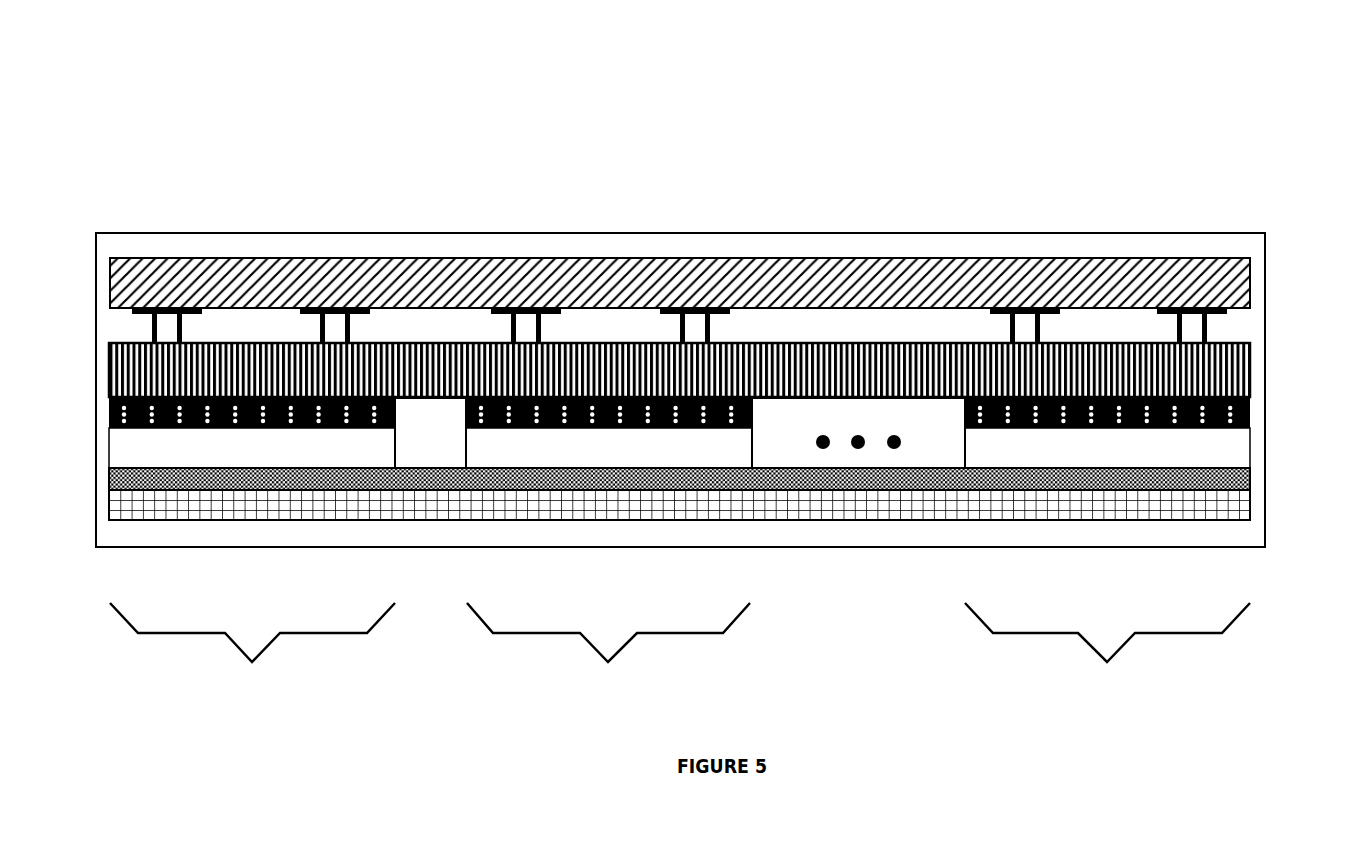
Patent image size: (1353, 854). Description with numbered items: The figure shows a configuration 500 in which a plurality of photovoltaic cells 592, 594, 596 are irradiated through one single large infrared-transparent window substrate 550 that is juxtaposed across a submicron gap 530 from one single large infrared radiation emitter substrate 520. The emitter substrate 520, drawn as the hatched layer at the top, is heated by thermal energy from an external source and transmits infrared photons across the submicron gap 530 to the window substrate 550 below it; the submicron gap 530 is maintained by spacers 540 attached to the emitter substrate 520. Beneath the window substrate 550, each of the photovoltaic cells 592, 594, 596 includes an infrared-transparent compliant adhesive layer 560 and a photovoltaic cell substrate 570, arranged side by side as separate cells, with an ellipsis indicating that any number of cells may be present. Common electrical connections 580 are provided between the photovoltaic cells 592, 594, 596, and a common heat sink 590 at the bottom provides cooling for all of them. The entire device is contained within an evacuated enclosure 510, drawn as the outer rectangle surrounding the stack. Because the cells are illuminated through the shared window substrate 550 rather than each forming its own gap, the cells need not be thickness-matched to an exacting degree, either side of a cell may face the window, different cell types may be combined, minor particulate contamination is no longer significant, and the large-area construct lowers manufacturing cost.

The configuration 500 is at (163, 58).
The evacuated enclosure 510 is at (652, 220).
The single large infrared radiation emitter substrate 520 is at (1251, 268).
The submicron gap 530 is at (1251, 320).
The spacers 540 is at (1218, 333).
The single large infrared-transparent window substrate 550 is at (1251, 383).
The infrared-transparent compliant adhesive layer 560 is at (1251, 412).
The photovoltaic cell substrate 570 is at (1251, 448).
The common electrical connections 580 is at (1251, 476).
The common heat sink 590 is at (1251, 504).
The photovoltaic cell 592 is at (252, 530).
The photovoltaic cell 594 is at (597, 530).
The photovoltaic cell 596 is at (1107, 530).